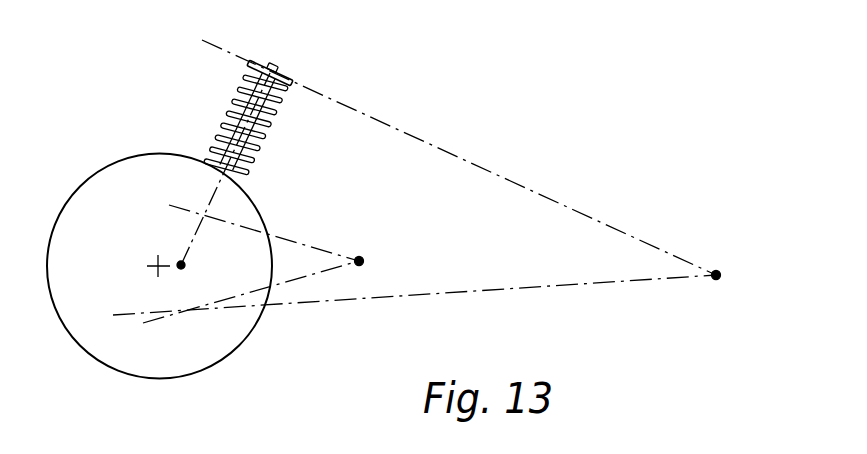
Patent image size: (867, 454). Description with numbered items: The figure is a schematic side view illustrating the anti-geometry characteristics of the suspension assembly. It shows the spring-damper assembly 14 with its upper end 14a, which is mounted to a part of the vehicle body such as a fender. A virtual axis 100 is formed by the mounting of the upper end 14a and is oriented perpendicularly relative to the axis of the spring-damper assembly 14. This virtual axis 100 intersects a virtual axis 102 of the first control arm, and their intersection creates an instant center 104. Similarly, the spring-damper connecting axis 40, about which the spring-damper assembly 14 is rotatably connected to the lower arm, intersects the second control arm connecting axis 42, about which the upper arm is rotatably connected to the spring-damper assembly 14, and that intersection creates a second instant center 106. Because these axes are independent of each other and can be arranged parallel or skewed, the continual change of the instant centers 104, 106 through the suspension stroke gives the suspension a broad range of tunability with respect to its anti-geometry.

The spring-damper assembly 14 is at (224, 108).
The upper end 14a is at (283, 73).
The spring-damper connecting axis 40 is at (295, 280).
The connecting axis 42 is at (283, 238).
The virtual axis 100 is at (513, 182).
The virtual axis 102 is at (565, 285).
The instant center 104 is at (716, 270).
The instant center 106 is at (359, 261).